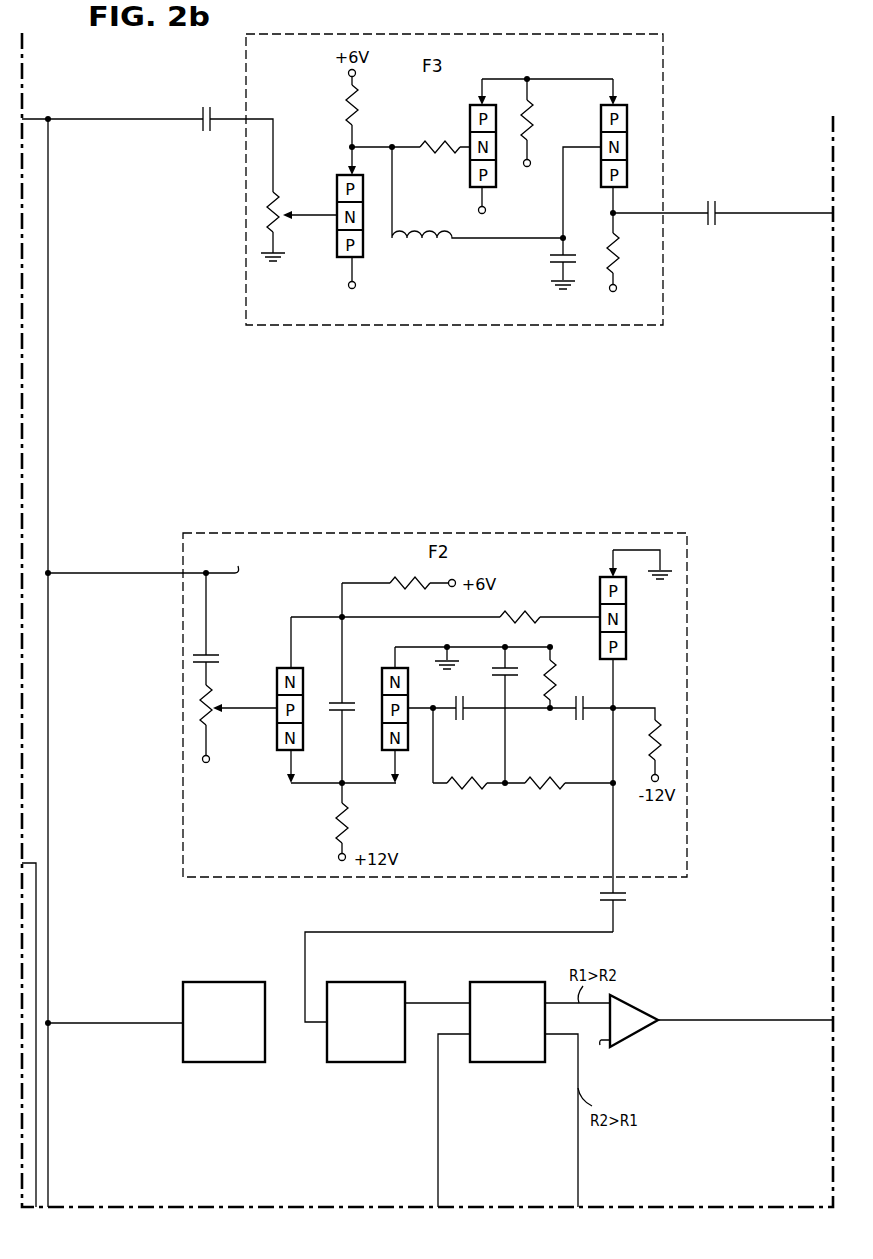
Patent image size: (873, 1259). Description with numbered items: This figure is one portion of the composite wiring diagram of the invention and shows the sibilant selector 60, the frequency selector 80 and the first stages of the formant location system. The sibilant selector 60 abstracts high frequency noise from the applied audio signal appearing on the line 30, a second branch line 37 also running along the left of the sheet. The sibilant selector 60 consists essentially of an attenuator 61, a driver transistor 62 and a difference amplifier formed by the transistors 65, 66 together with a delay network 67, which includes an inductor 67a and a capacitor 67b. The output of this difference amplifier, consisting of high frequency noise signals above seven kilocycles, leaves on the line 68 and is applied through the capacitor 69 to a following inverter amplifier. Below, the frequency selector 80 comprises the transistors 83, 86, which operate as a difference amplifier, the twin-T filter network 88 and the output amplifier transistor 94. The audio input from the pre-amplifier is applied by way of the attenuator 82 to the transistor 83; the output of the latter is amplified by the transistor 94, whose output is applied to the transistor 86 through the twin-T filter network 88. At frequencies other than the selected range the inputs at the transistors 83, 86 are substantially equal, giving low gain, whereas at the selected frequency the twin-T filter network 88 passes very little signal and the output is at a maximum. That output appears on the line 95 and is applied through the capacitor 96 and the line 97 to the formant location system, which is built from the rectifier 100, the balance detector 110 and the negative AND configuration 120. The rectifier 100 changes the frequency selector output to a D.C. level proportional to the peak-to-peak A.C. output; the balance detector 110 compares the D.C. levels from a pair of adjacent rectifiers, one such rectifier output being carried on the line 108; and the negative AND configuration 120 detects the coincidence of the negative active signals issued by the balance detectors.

The line 30 is at (112, 121).
The reference line 37 is at (35, 927).
The sibilant selector 60 is at (420, 327).
The attenuator 61 is at (287, 193).
The driver transistor 62 is at (337, 243).
The transistor 65 is at (495, 178).
The transistor 66 is at (627, 150).
The delay network 67 is at (484, 227).
The inductor 67a is at (423, 238).
The capacitor 67b is at (546, 262).
The output line 68 is at (690, 212).
The capacitor 69 is at (716, 212).
The frequency selector 80 is at (687, 797).
The attenuator 82 is at (219, 717).
The transistor 83 is at (305, 692).
The transistor 86 is at (382, 692).
The twin-T filter network 88 is at (501, 803).
The output amplifier transistor 94 is at (627, 628).
The line 95 is at (613, 813).
The capacitor 96 is at (626, 897).
The line 97 is at (475, 932).
The rectifier 100 is at (372, 982).
The line 108 is at (438, 1128).
The balance detector 110 is at (515, 982).
The negative AND configuration 120 is at (630, 1005).